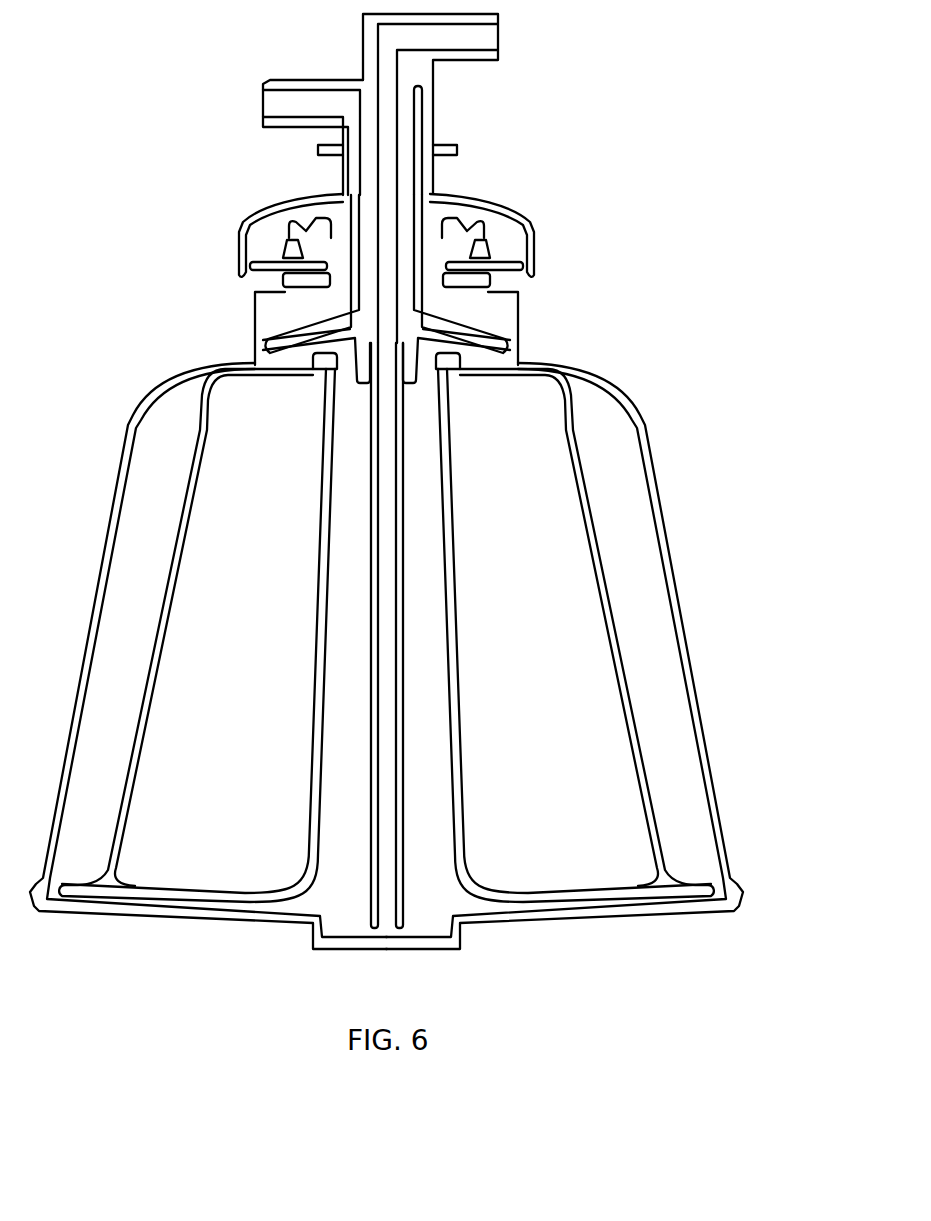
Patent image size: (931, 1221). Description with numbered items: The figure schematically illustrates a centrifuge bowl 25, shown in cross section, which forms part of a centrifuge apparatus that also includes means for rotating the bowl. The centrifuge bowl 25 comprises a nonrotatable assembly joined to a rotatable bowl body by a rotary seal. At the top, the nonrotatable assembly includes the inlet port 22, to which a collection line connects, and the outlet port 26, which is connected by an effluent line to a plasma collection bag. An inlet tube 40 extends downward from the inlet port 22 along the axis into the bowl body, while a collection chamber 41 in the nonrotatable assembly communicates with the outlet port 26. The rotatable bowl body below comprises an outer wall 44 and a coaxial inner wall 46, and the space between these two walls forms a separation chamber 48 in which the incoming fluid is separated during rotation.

The inlet port 22 is at (497, 34).
The outlet port 26 is at (268, 101).
The collection chamber 41 is at (272, 346).
The centrifuge bowl 25 is at (403, 632).
The outer wall 44 is at (668, 512).
The separation chamber 48 is at (665, 660).
The inner wall 46 is at (597, 572).
The inlet tube 40 is at (400, 462).